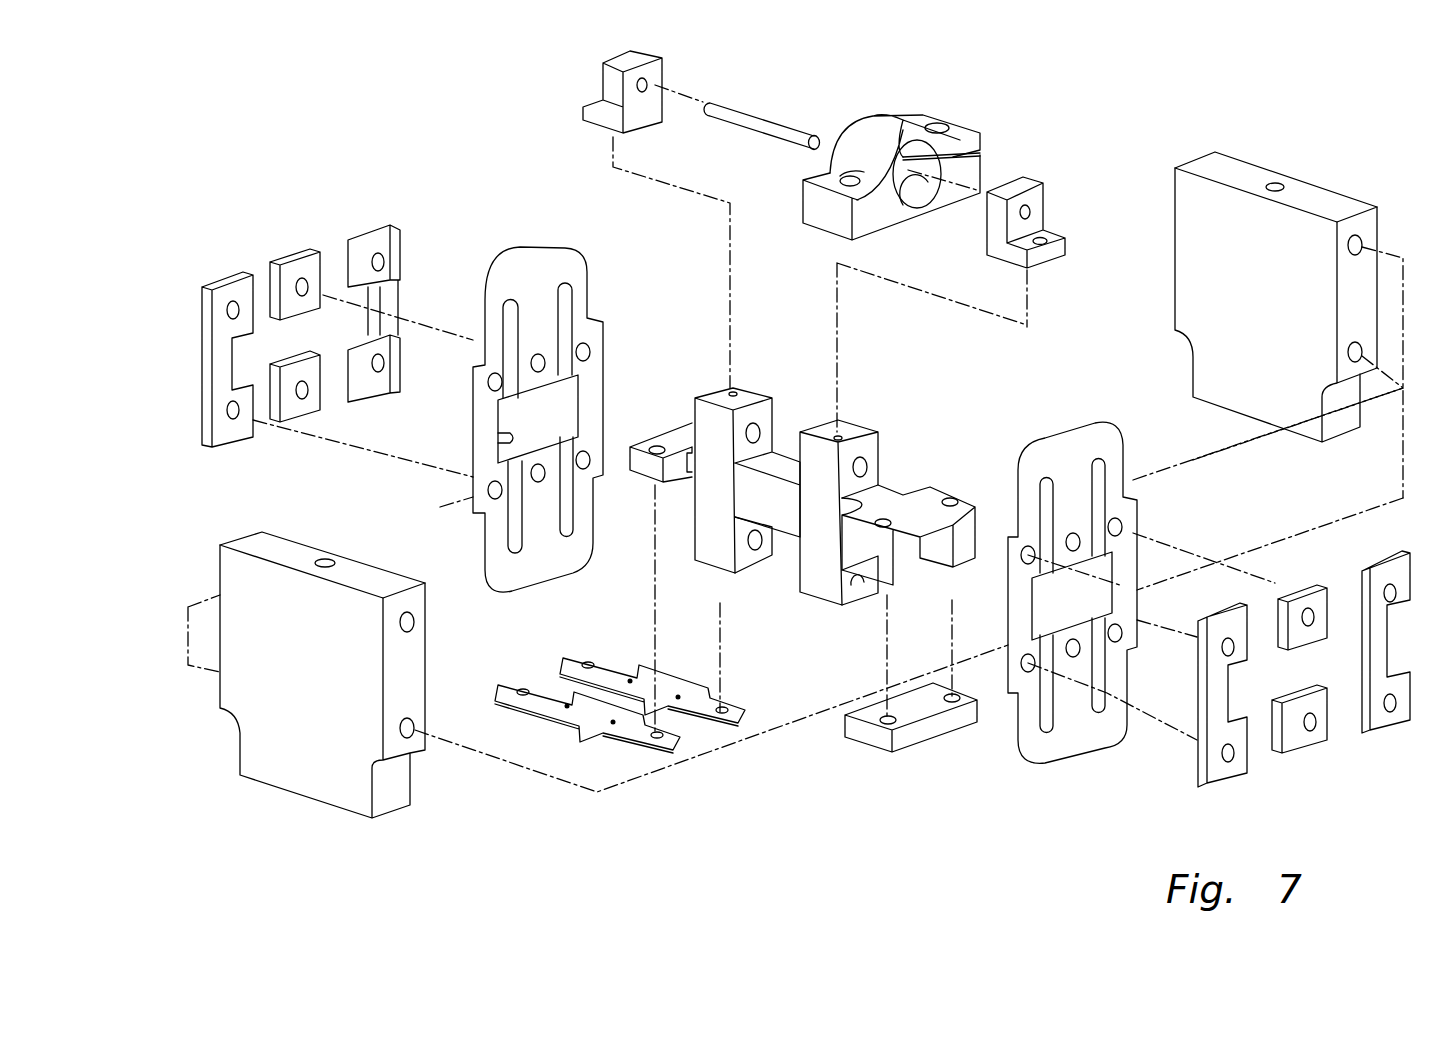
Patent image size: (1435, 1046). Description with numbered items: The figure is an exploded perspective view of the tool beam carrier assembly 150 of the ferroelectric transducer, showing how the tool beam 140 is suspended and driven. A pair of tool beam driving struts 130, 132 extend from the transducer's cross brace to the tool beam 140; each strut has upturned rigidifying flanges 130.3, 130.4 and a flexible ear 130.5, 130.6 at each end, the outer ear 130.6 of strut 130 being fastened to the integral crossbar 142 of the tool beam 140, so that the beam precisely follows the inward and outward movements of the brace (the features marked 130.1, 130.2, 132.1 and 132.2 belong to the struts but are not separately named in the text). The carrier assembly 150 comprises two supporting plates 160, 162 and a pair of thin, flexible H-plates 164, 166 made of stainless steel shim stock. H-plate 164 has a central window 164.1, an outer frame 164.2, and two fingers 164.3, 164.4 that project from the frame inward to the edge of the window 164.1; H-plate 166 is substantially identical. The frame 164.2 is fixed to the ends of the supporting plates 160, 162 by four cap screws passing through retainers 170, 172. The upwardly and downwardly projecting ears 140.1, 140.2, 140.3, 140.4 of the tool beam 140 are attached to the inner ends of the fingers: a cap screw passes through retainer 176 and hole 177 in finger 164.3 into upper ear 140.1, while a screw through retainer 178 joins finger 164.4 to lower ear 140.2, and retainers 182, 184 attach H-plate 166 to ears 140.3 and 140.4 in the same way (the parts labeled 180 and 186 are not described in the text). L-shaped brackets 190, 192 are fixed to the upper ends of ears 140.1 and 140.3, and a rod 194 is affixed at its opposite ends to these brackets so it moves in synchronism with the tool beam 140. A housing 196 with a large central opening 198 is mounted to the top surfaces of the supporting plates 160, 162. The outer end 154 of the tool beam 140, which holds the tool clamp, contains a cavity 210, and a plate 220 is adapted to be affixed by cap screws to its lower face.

The tool beam driving strut 130 is at (604, 729).
The strip portion 130.1 is at (537, 700).
The strip portion 130.2 is at (645, 745).
The upturned rigidifying flange 130.3 is at (573, 719).
The upturned rigidifying flange 130.4 is at (575, 694).
The flexible ear 130.5 is at (522, 688).
The flexible ear 130.6 is at (670, 746).
The tool beam driving strut 132 is at (694, 693).
The strip hole 132.1 is at (632, 630).
The strip hole 132.2 is at (745, 722).
The tool beam 140 is at (811, 492).
The upwardly projecting ear 140.1 is at (745, 392).
The lower ear 140.2 is at (720, 547).
The upwardly projecting ear 140.3 is at (850, 430).
The downwardly projecting ear 140.4 is at (808, 582).
The integral crossbar 142 is at (665, 430).
The tool beam carrier assembly 150 is at (902, 826).
The outer end of tool beam 154 is at (928, 490).
The supporting plate 160 is at (322, 675).
The supporting plate 162 is at (1276, 297).
The H-plate 164 is at (578, 262).
The central window 164.1 is at (505, 440).
The outer frame 164.2 is at (527, 280).
The finger 164.3 is at (540, 320).
The finger 164.4 is at (527, 512).
The H-plate 166 is at (1065, 752).
The retainer 170 is at (222, 448).
The retainer 172 is at (385, 225).
The retainer 176 is at (292, 250).
The hole 177 is at (540, 368).
The retainer 178 is at (304, 412).
The bar 180 is at (1223, 775).
The retainer 182 is at (1303, 603).
The retainer 184 is at (1303, 745).
The bar 186 is at (1378, 727).
The L-shaped bracket 190 is at (590, 100).
The L-shaped bracket 192 is at (1037, 200).
The rod 194 is at (745, 108).
The housing 196 is at (935, 127).
The central opening 198 is at (920, 196).
The cavity 210 is at (945, 545).
The plate 220 is at (930, 735).